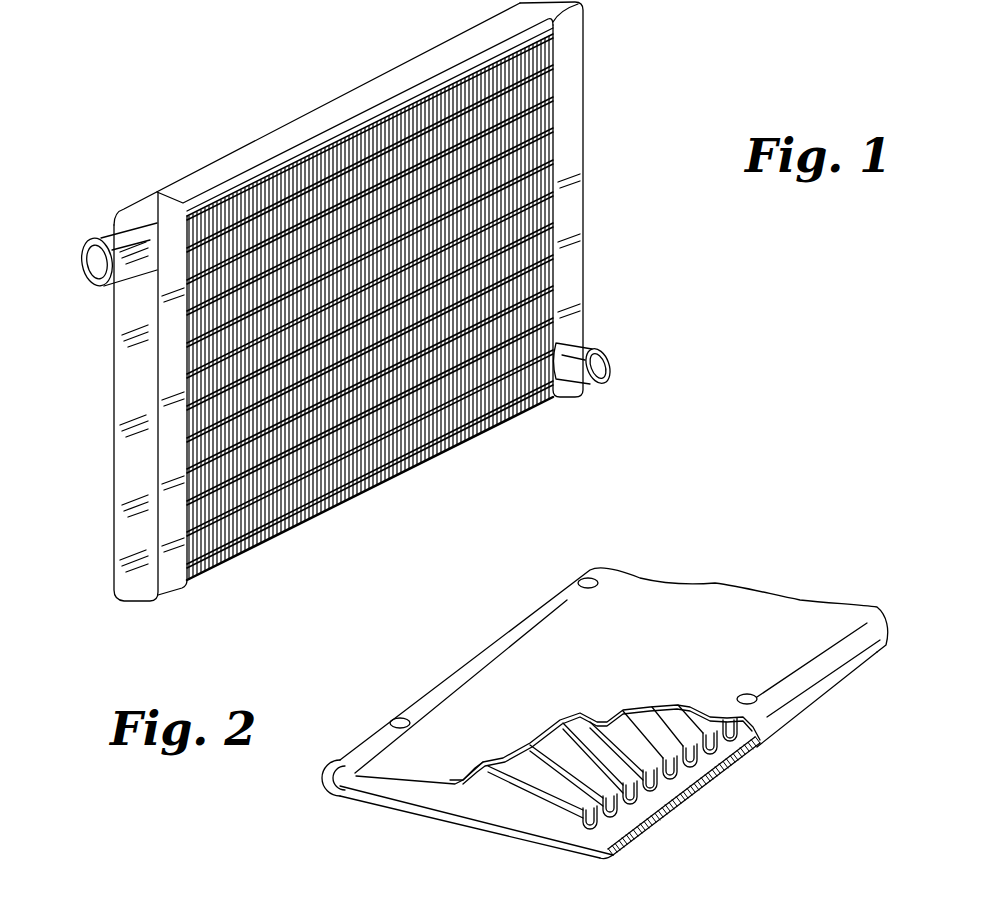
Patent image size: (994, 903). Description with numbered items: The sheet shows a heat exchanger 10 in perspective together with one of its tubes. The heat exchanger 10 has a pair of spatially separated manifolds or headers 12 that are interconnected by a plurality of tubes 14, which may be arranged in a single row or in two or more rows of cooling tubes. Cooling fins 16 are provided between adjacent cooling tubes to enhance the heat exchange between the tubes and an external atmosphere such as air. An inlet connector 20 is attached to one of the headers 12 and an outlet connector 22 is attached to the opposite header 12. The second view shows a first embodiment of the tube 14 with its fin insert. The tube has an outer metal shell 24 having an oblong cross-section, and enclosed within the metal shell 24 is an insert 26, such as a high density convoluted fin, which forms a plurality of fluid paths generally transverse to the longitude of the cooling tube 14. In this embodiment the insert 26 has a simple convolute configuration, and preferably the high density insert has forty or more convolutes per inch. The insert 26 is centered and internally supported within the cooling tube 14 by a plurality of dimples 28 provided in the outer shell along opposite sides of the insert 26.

In FIG. 1, the heat exchanger 10 is at (268, 98).
In FIG. 1, the headers 12 is at (115, 400).
In FIG. 1, the tubes 14 is at (555, 47).
In FIG. 2, the tubes 14 is at (462, 645).
In FIG. 1, the cooling fins 16 is at (192, 288).
In FIG. 1, the inlet connector 20 is at (110, 240).
In FIG. 1, the outlet connector 22 is at (592, 350).
In FIG. 2, the outer metal shell 24 is at (343, 800).
In FIG. 2, the insert 26 is at (520, 808).
In FIG. 2, the dimples 28 is at (400, 718).